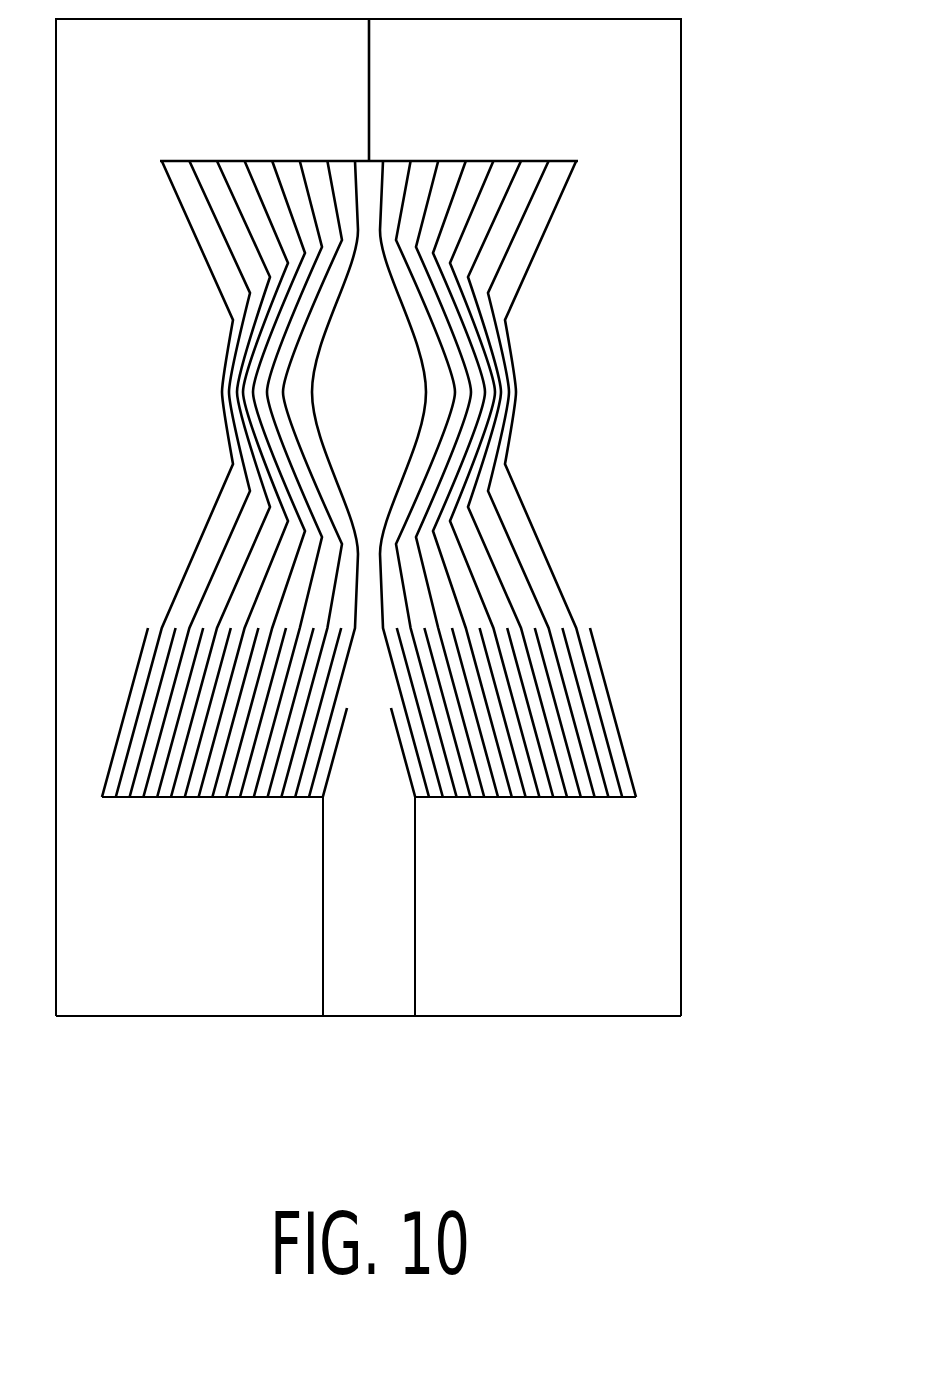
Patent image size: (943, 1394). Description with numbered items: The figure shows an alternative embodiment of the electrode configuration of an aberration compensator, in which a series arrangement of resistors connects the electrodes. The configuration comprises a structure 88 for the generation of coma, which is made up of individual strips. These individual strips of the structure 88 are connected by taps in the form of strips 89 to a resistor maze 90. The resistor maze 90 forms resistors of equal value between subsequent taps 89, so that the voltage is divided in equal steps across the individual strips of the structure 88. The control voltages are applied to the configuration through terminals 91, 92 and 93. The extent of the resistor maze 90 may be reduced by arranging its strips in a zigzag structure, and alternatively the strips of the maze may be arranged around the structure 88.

The structure 88 is at (413, 392).
The strips 89 is at (495, 503).
The resistor maze 90 is at (568, 642).
The terminal 91 is at (192, 987).
The terminal 92 is at (370, 987).
The terminal 93 is at (547, 987).